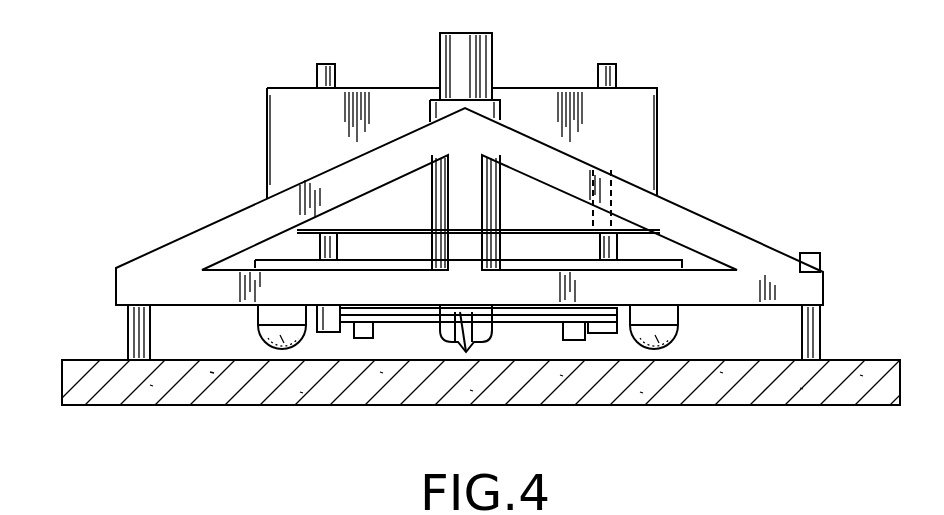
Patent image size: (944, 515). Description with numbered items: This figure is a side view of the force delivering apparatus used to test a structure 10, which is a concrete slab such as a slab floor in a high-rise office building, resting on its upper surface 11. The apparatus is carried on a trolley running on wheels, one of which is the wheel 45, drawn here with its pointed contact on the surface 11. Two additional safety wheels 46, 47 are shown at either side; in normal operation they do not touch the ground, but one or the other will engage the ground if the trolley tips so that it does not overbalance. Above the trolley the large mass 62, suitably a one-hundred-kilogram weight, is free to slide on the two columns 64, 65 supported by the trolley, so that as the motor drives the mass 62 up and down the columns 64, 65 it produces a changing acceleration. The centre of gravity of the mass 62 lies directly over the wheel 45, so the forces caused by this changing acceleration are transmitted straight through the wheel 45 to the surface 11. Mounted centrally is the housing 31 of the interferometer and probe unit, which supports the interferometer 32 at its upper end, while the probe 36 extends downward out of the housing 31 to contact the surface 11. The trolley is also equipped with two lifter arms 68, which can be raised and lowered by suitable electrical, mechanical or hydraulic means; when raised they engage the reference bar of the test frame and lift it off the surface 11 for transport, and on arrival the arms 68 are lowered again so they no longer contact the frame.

The structure to be tested 10 is at (178, 395).
The surface 11 is at (94, 358).
The housing 31 is at (425, 106).
The interferometer 32 is at (462, 36).
The probe 36 is at (496, 350).
The wheel 45 is at (462, 355).
The safety wheel 46 is at (290, 348).
The safety wheel 47 is at (653, 348).
The mass 62 is at (540, 102).
The column 64 is at (616, 74).
The column 65 is at (312, 64).
The lifter arm 68 is at (366, 342).